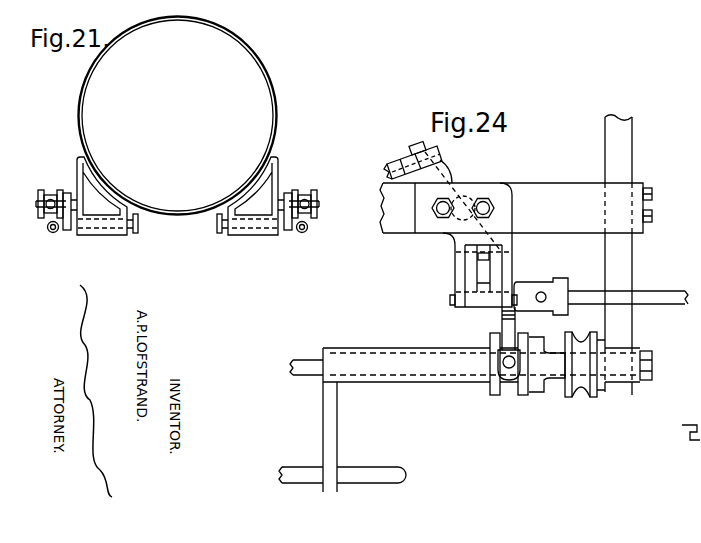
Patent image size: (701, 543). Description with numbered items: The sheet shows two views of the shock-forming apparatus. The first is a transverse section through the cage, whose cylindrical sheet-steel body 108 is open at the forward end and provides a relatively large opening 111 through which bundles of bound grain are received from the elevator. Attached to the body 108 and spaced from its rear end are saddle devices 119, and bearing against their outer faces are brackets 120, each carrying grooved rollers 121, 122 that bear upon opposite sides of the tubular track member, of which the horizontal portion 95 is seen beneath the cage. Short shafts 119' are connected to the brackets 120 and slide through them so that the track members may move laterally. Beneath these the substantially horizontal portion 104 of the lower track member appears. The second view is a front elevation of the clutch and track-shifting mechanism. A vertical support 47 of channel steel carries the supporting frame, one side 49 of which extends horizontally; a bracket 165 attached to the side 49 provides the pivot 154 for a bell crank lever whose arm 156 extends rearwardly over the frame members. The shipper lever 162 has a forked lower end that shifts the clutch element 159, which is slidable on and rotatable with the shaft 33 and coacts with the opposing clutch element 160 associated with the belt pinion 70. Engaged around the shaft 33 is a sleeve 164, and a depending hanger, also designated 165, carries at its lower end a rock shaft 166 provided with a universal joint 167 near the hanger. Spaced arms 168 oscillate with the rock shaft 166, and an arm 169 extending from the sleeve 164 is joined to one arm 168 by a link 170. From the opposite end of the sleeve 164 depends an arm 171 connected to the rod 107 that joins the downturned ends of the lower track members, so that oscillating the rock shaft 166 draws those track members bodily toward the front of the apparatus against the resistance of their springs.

In FIG. 21, the cage body 108 is at (201, 20).
In FIG. 21, the opening 111 is at (257, 63).
In FIG. 21, the saddle device 119 is at (177, 209).
In FIG. 21, the short shaft 119' is at (182, 237).
In FIG. 21, the bracket 120 is at (64, 198).
In FIG. 21, the grooved roller 121 is at (57, 190).
In FIG. 21, the grooved roller 122 is at (63, 209).
In FIG. 21, the horizontal portion of track member 95 is at (55, 195).
In FIG. 21, the horizontal portion of lower track member 104 is at (54, 233).
In FIG. 24, the frame side 49 is at (533, 184).
In FIG. 24, the vertical support 47 is at (622, 156).
In FIG. 24, the bracket 165 is at (432, 164).
In FIG. 24, the pivot 154 is at (413, 146).
In FIG. 24, the bell crank arm 156 is at (400, 164).
In FIG. 24, the shipper lever 162 is at (487, 247).
In FIG. 24, the arm 168 is at (466, 278).
In FIG. 24, the universal joint 167 is at (550, 281).
In FIG. 24, the rock shaft 166 is at (658, 291).
In FIG. 24, the link 170 is at (490, 322).
In FIG. 24, the clutch element 159 is at (536, 390).
In FIG. 24, the sleeve 164 is at (405, 348).
In FIG. 24, the arm 169 is at (483, 351).
In FIG. 24, the clutch element 160 is at (562, 390).
In FIG. 24, the belt pinion 70 is at (580, 380).
In FIG. 24, the shaft 33 is at (309, 358).
In FIG. 24, the arm 171 is at (330, 410).
In FIG. 24, the rod 107 is at (292, 473).